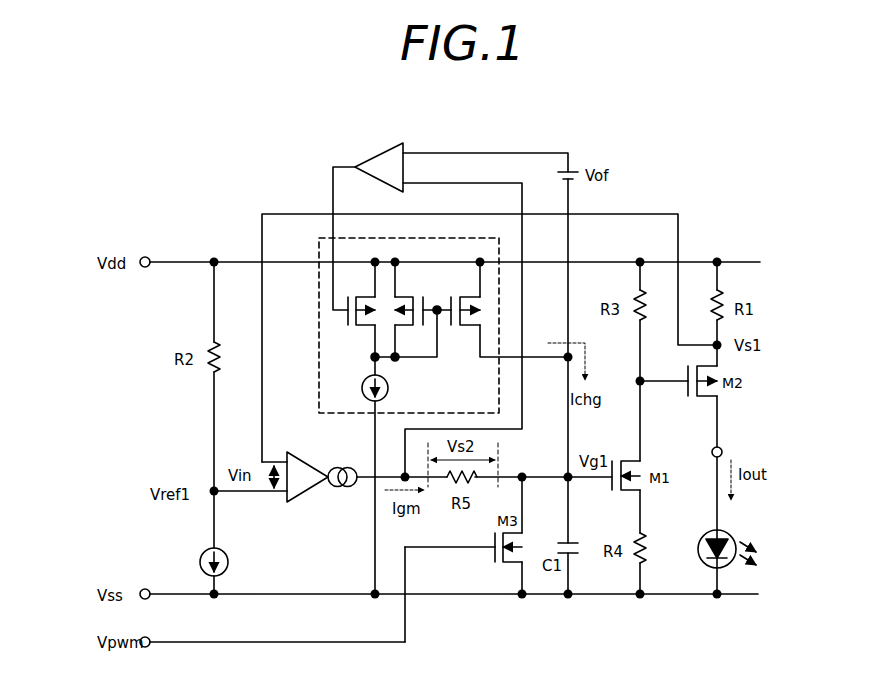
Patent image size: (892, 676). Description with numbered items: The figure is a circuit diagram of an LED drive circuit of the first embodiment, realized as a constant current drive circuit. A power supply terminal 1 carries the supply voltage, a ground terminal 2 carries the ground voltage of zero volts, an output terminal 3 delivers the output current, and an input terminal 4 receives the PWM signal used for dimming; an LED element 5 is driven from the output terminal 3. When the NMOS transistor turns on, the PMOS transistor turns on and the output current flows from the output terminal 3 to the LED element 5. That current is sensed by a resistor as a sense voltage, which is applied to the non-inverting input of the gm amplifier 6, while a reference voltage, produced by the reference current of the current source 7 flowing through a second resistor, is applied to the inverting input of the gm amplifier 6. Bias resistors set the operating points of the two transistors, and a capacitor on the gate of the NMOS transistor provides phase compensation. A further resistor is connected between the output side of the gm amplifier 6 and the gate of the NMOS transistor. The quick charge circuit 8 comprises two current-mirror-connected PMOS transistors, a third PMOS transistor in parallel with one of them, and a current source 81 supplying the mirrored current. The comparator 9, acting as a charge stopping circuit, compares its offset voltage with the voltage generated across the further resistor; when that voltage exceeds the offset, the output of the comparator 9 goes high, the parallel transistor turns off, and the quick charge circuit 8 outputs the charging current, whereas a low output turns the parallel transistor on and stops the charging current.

The power supply terminal 1 is at (147, 257).
The ground terminal 2 is at (147, 589).
The output terminal 3 is at (722, 449).
The input terminal of a PWM signal 4 is at (147, 637).
The LED element 5 is at (733, 537).
The gm amplifier 6 is at (308, 462).
The current source 7 is at (200, 560).
The quick charge circuit 8 is at (424, 416).
The current source 81 is at (362, 383).
The comparator 9 is at (372, 155).